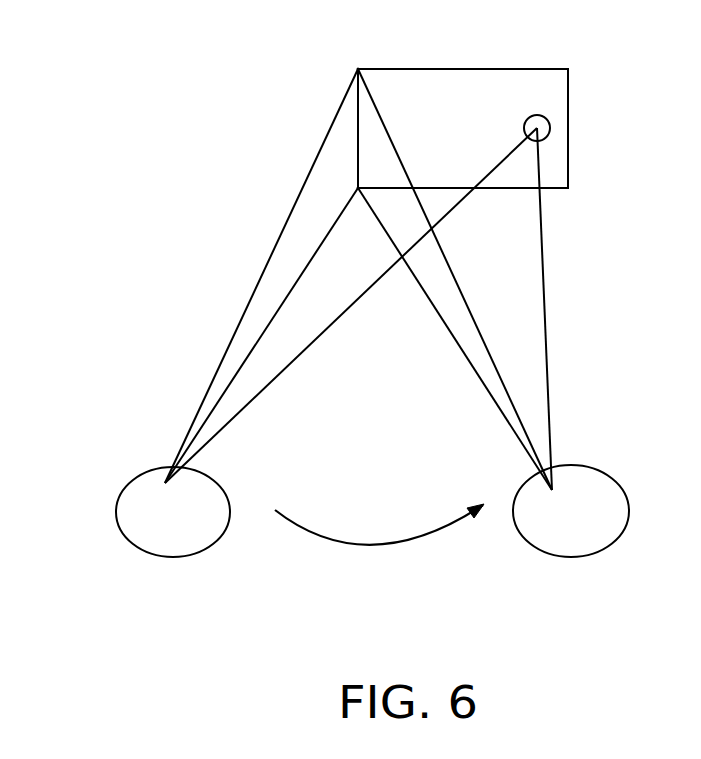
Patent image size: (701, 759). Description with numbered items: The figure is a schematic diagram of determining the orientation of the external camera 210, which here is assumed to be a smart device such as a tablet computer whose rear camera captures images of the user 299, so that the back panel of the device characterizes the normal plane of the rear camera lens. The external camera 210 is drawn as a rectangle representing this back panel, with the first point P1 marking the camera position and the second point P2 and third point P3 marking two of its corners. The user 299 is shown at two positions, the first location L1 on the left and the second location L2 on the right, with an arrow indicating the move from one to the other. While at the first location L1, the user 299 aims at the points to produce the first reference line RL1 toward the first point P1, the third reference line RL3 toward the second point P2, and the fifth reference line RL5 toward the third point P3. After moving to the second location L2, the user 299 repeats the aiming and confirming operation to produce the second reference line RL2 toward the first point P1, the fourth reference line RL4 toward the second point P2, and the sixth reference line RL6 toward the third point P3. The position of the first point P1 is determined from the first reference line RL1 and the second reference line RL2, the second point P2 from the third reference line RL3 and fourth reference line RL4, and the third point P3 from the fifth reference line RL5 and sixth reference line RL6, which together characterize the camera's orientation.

The external camera 210 is at (539, 80).
The first point P1 is at (568, 130).
The second point P2 is at (347, 49).
The third point P3 is at (339, 188).
The first reference line RL1 is at (277, 377).
The second reference line RL2 is at (547, 273).
The third reference line RL3 is at (257, 280).
The fourth reference line RL4 is at (465, 300).
The fifth reference line RL5 is at (303, 277).
The sixth reference line RL6 is at (482, 382).
The user 299 is at (137, 508).
The first location L1 is at (173, 536).
The second location L2 is at (571, 535).